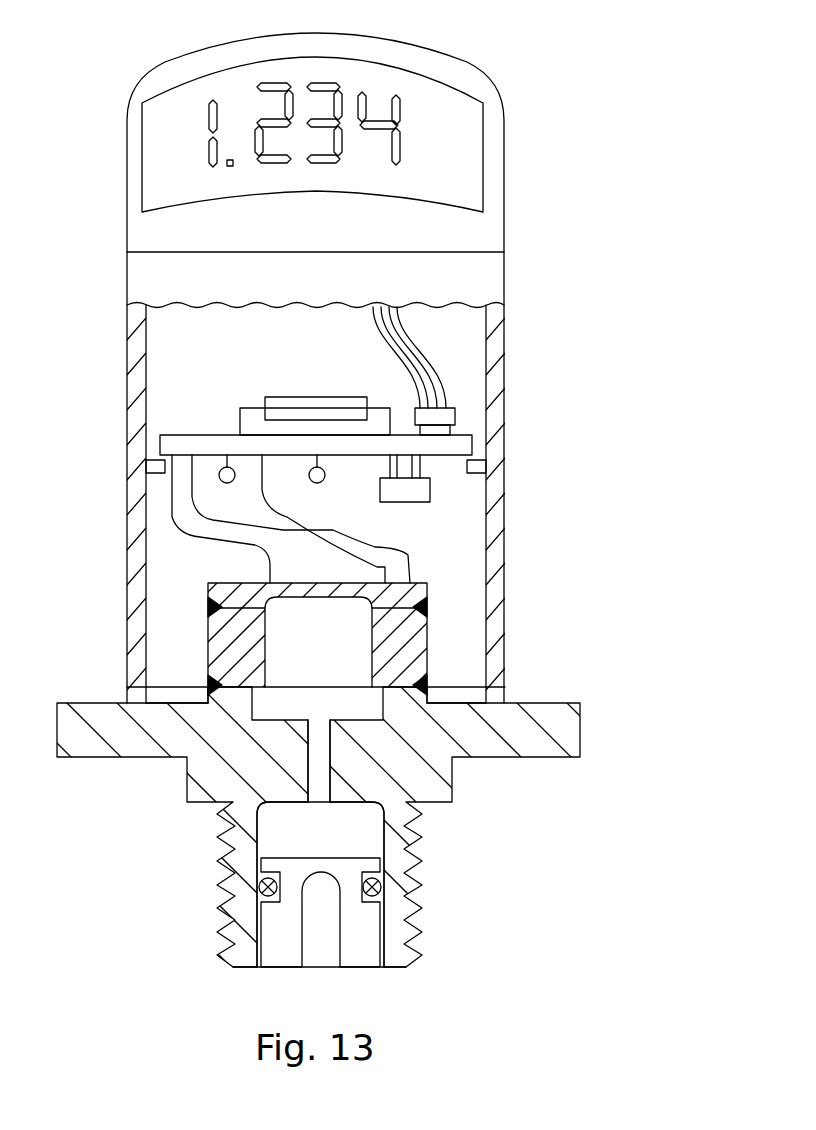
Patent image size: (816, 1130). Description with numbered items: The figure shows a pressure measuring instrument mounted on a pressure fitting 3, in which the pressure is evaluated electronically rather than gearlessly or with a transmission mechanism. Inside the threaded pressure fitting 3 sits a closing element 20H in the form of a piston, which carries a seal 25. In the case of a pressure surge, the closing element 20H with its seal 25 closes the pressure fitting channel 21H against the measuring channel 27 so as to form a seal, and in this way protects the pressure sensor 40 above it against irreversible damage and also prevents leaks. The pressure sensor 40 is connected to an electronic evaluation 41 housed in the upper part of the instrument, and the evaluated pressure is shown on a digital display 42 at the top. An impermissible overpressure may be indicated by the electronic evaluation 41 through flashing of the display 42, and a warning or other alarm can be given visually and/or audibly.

The digital display 42 is at (180, 108).
The electronic evaluation 41 is at (107, 387).
The pressure sensor 40 is at (410, 642).
The measuring channel 27 is at (320, 757).
The pressure fitting channel 21H is at (365, 838).
The closing element 20H is at (277, 922).
The seal 25 is at (374, 884).
The pressure fitting 3 is at (386, 966).